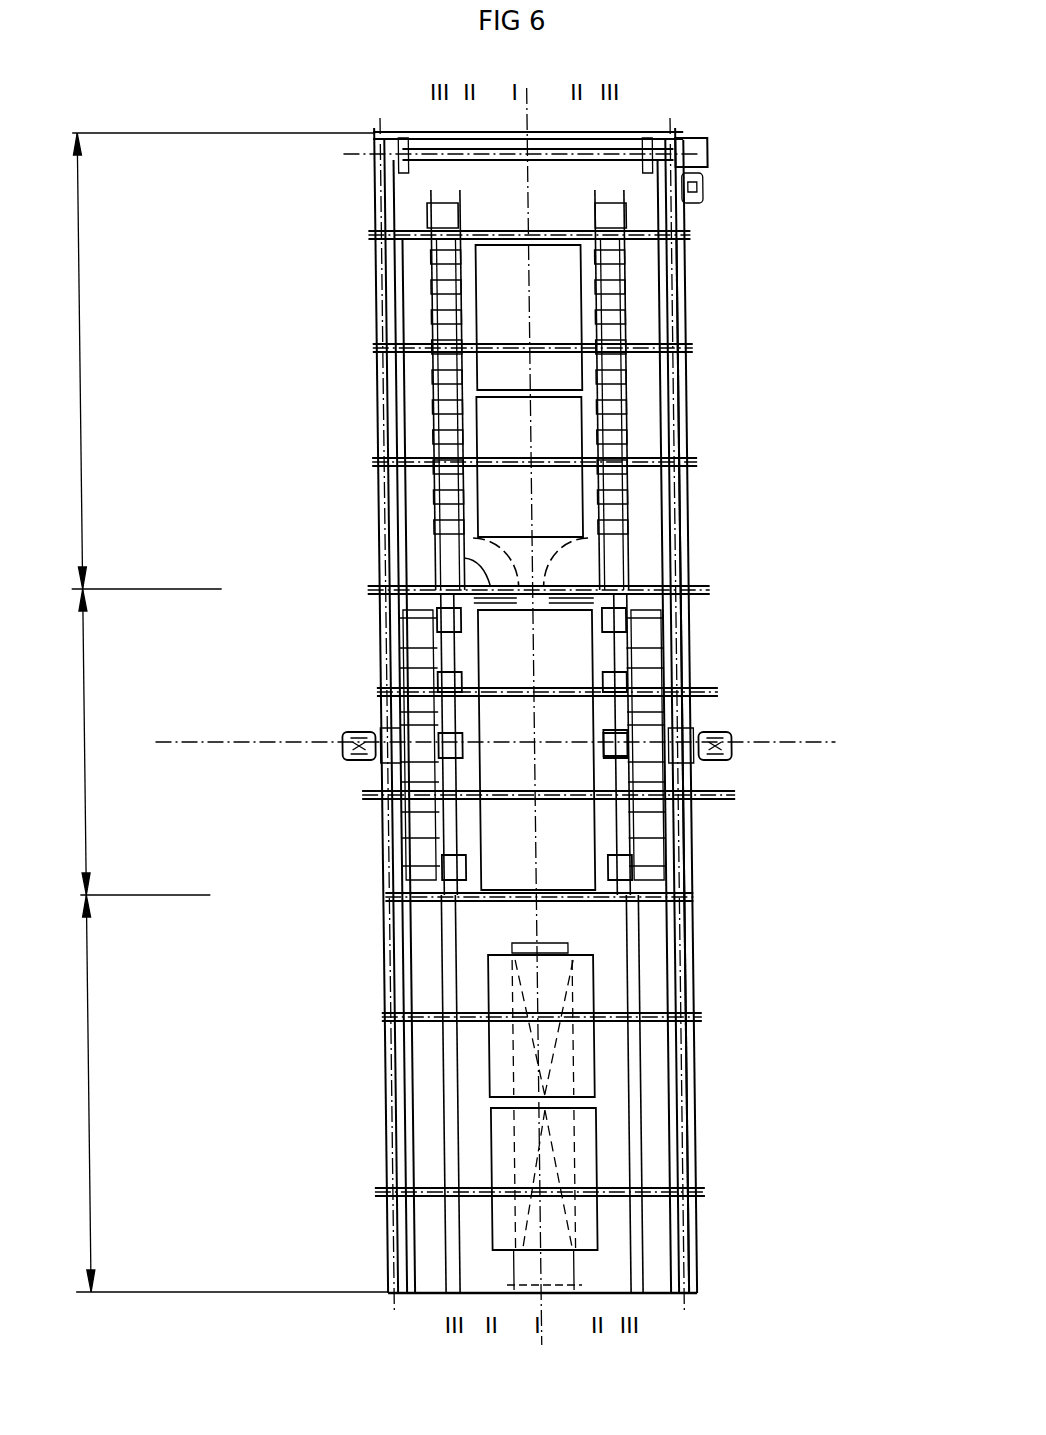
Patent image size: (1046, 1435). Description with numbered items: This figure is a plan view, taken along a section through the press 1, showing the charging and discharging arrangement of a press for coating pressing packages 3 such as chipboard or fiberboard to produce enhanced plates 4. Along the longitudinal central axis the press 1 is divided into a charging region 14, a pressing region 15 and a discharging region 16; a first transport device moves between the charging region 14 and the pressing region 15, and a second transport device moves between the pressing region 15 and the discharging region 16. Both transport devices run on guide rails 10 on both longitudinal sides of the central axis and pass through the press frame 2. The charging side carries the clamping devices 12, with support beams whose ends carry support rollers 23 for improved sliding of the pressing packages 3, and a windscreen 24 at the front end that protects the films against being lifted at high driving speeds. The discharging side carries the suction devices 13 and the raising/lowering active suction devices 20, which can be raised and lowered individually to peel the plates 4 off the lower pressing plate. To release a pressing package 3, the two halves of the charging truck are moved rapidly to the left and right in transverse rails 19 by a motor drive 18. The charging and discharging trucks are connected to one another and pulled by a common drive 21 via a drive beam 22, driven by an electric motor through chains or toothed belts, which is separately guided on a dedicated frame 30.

The press 1 is at (366, 630).
The press frame 2 is at (621, 625).
The pressing package 3 is at (503, 852).
The plate 4 is at (567, 525).
The guide rail 10 is at (632, 568).
The clamping device 12 is at (627, 740).
The suction device 13 is at (630, 408).
The charging region 14 is at (223, 1093).
The pressing region 15 is at (141, 742).
The discharging region 16 is at (215, 361).
The drive 18 is at (340, 738).
The transverse rail 19 is at (394, 1192).
The active suction device 20 is at (630, 310).
The common drive 21 is at (694, 157).
The drive beam 22 is at (698, 217).
The support roller 23 is at (421, 590).
The windscreen 24 is at (472, 558).
The frame 30 is at (681, 155).